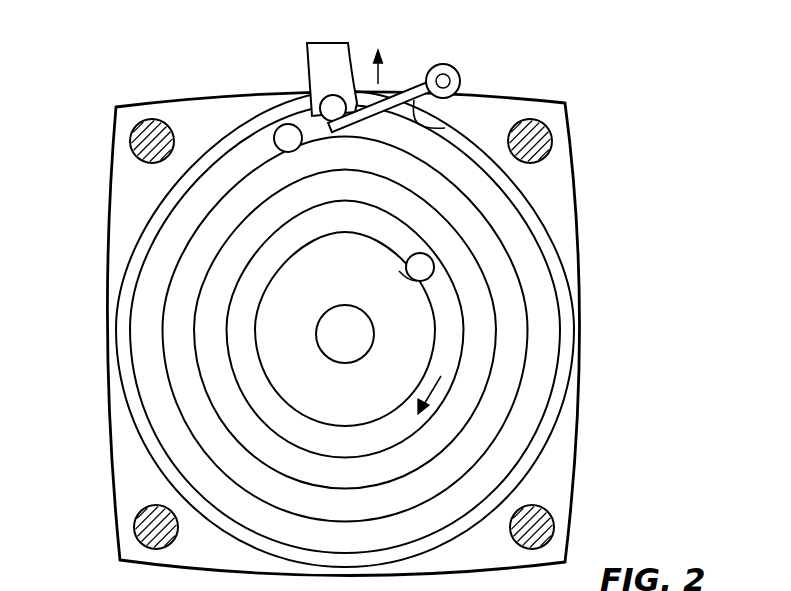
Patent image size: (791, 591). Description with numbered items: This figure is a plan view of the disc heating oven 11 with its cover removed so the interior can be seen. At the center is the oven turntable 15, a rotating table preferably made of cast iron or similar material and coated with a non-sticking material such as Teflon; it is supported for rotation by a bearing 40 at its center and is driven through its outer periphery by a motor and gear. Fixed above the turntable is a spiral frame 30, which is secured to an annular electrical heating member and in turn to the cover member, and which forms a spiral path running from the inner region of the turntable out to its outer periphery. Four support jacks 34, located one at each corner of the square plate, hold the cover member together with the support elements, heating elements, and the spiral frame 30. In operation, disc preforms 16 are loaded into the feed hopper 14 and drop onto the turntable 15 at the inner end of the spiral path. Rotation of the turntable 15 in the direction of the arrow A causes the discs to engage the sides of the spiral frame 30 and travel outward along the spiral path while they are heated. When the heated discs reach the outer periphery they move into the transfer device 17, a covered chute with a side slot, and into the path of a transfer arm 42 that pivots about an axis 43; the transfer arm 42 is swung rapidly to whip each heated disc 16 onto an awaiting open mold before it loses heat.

The disc heating oven 11 is at (573, 157).
The feed hopper 14 is at (430, 273).
The oven turntable 15 is at (565, 263).
The disc preforms 16 is at (284, 136).
The transfer device 17 is at (306, 63).
The spiral frame 30 is at (433, 352).
The support jacks 34 is at (145, 143).
The bearing 40 is at (347, 305).
The transfer arm 42 is at (412, 102).
The axis 43 is at (453, 87).